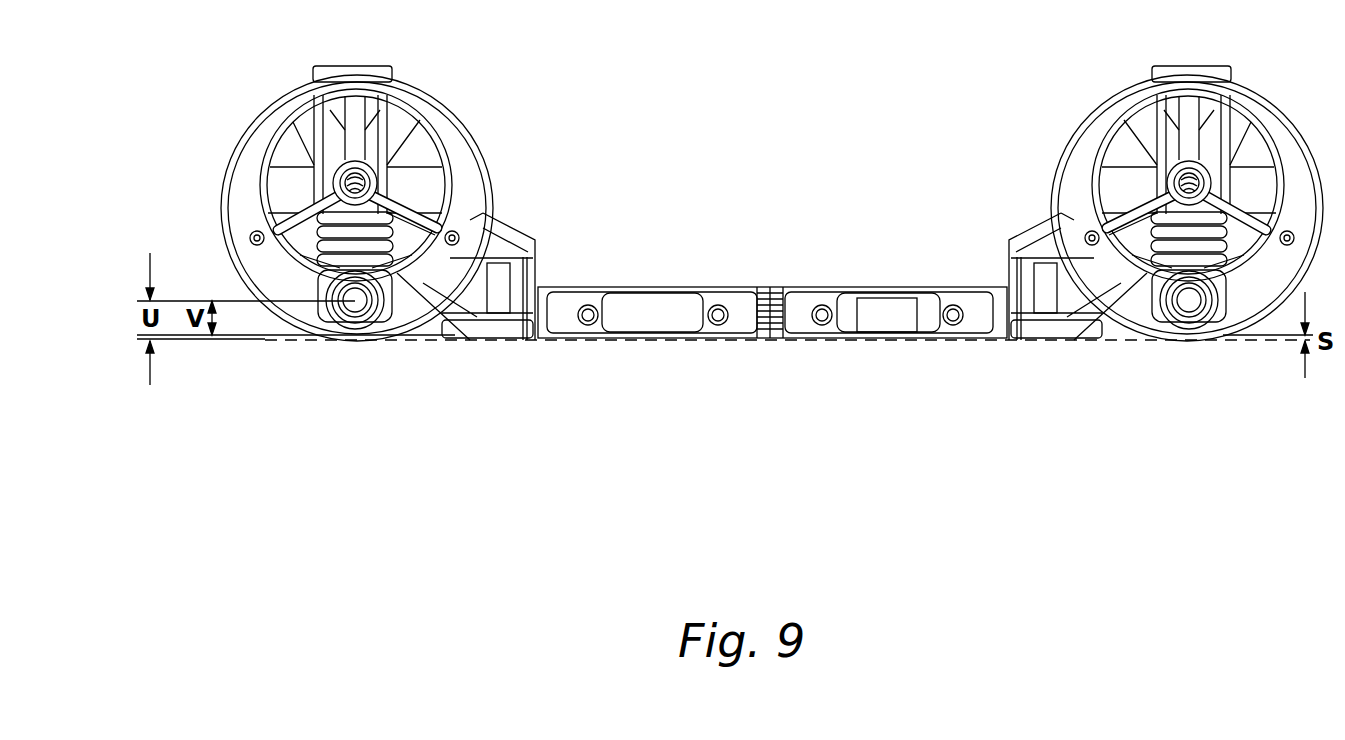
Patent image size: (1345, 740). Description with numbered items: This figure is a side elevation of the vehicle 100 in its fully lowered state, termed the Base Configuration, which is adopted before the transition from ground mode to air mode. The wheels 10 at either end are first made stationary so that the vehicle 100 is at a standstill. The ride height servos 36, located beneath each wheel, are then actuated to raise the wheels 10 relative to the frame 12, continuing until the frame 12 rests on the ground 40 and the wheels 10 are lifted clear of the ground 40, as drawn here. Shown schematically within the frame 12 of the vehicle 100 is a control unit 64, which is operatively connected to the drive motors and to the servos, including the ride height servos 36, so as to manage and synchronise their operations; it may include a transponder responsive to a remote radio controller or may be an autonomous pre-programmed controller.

The vehicle 100 is at (751, 236).
The wheels 10 is at (751, 243).
The frame 12 is at (772, 276).
The ride height servos 36 is at (355, 300).
The ground 40 is at (302, 344).
The control unit 64 is at (888, 312).